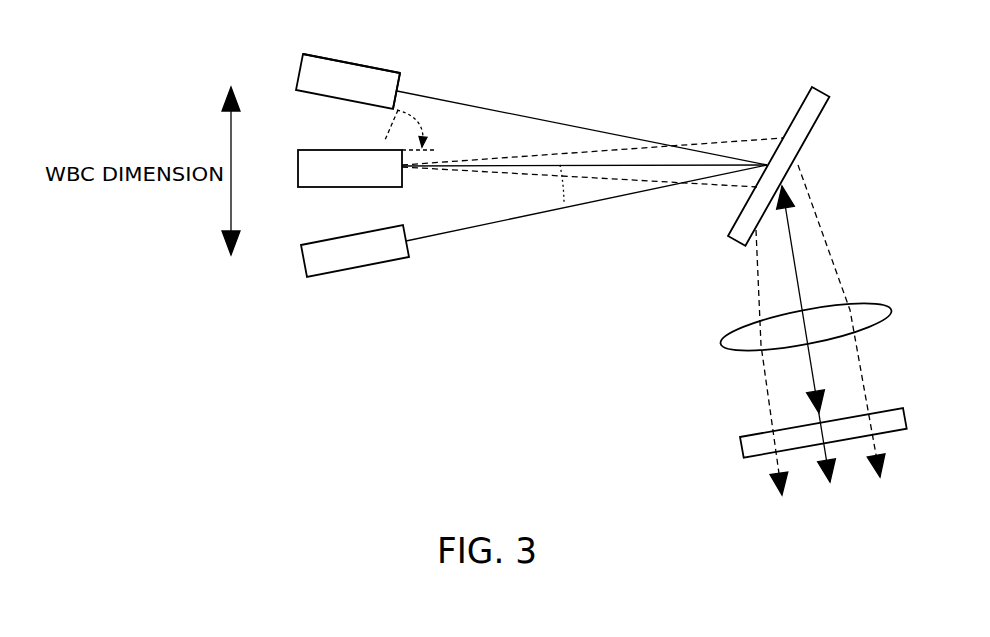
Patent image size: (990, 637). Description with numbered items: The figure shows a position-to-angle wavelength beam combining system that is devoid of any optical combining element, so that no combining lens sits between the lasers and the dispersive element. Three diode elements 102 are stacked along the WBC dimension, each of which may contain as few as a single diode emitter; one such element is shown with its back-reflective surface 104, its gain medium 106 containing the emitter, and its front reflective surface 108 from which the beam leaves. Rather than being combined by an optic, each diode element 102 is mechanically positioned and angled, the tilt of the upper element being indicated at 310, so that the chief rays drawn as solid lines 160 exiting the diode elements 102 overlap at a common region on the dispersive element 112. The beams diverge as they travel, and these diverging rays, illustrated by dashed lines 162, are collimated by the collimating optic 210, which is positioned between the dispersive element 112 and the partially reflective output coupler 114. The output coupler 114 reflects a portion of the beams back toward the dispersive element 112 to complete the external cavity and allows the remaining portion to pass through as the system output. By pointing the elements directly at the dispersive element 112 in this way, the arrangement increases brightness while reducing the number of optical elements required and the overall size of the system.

The diode element 102 is at (348, 148).
The back-reflective surface 104 is at (348, 64).
The gain medium 106 is at (343, 62).
The front reflective surface 108 is at (400, 76).
The rotation of emitter 310 is at (420, 124).
The chief rays 160 is at (567, 206).
The diverging rays 162 is at (617, 182).
The dispersive element 112 is at (818, 89).
The collimating optic 210 is at (893, 311).
The partially reflective output coupler 114 is at (906, 416).